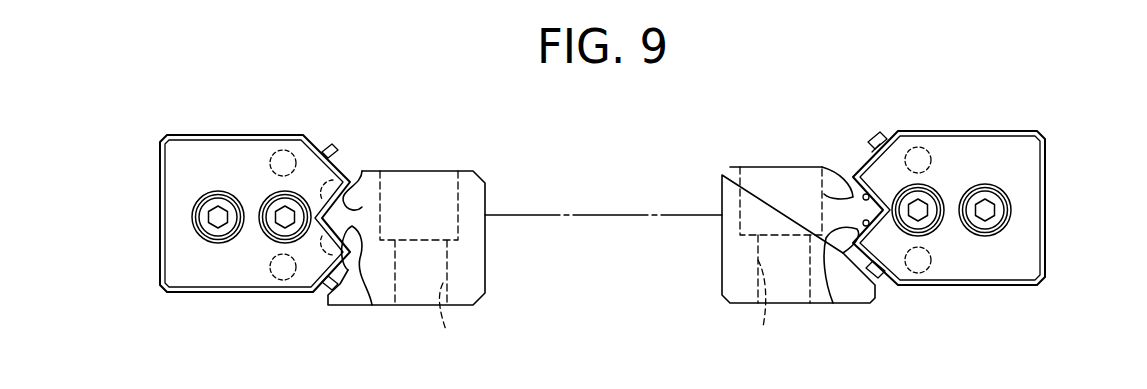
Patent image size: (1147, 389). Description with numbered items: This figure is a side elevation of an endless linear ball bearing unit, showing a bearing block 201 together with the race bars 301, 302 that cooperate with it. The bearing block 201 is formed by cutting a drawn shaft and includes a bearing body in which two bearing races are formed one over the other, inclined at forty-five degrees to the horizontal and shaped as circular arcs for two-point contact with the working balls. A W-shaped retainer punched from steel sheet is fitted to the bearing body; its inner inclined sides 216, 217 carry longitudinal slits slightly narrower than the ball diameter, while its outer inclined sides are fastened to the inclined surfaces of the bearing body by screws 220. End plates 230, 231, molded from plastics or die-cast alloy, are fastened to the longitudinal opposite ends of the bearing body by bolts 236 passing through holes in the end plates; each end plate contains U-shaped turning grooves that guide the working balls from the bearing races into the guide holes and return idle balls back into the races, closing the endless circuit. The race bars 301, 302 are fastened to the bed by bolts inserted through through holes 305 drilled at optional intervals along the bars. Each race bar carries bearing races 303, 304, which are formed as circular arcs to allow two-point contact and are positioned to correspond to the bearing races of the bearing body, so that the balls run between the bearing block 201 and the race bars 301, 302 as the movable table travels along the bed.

The bearing block 201 is at (1045, 148).
The inner inclined side 216 is at (853, 190).
The inner inclined side 217 is at (895, 273).
The screw 220 is at (870, 140).
The end plate 230 is at (1022, 180).
The end plate 231 is at (177, 268).
The bolt 236 is at (283, 219).
The race bar 301 is at (725, 198).
The race bar 302 is at (472, 262).
The bearing race 303 is at (350, 200).
The bearing race 304 is at (372, 305).
The through hole 305 is at (607, 309).